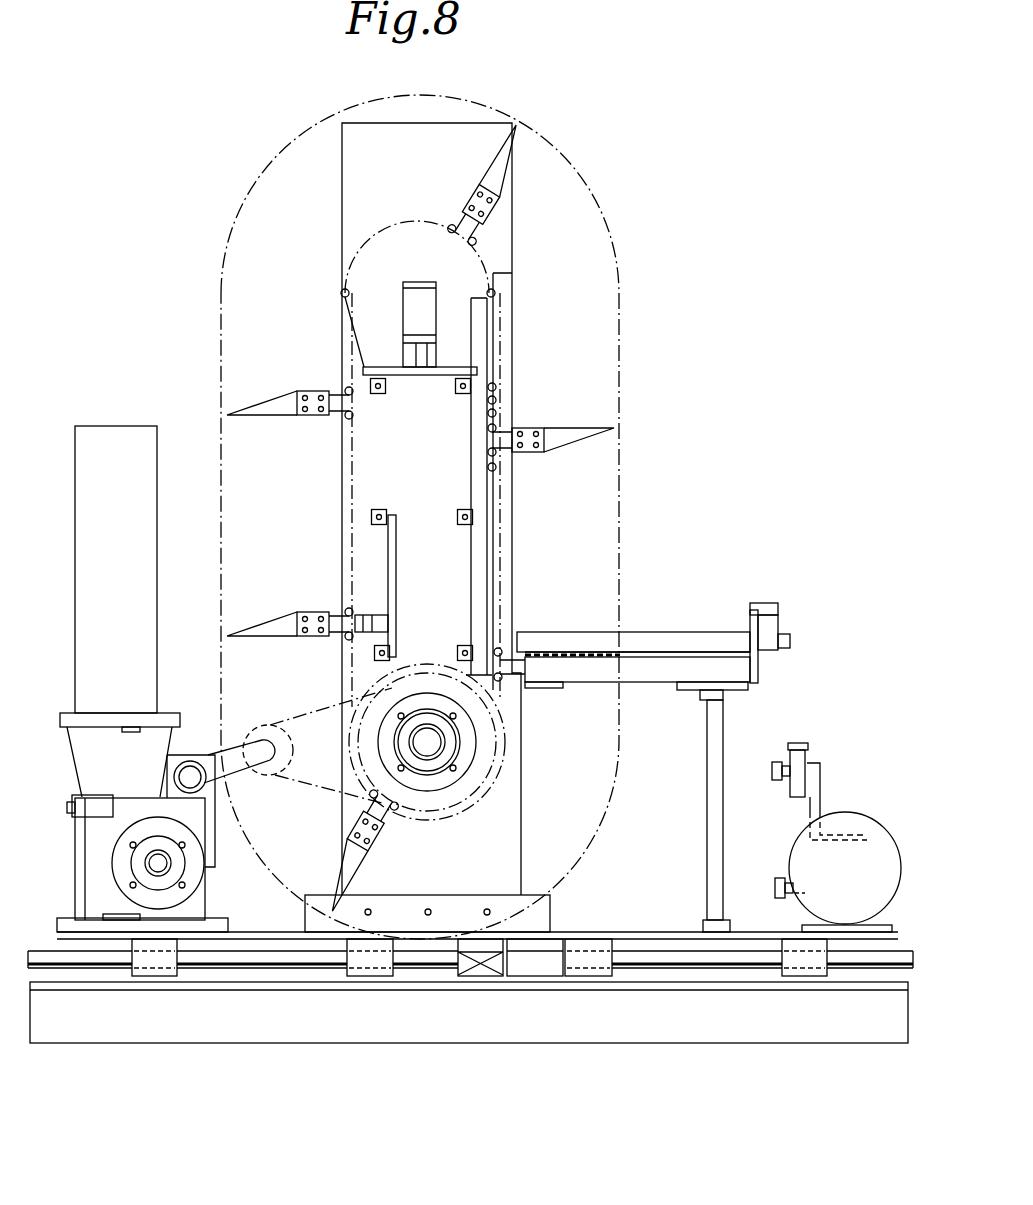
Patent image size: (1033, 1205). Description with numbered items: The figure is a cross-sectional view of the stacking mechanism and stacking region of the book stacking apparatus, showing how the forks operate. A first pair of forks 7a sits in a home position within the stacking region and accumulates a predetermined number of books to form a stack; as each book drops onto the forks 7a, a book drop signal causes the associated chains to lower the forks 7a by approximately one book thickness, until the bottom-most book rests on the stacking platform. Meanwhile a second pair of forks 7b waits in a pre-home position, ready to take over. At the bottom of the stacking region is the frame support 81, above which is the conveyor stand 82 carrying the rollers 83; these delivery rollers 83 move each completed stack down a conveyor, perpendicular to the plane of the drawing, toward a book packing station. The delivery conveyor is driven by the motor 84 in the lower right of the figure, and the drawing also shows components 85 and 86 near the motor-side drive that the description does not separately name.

The first pair of forks 7a is at (266, 623).
The second pair of forks 7b is at (263, 402).
The frame support 81 is at (648, 683).
The conveyor stand 82 is at (688, 632).
The rollers 83 is at (638, 652).
The motor 84 is at (846, 812).
The shaft 85 is at (146, 870).
The coupling flange 86 is at (115, 845).